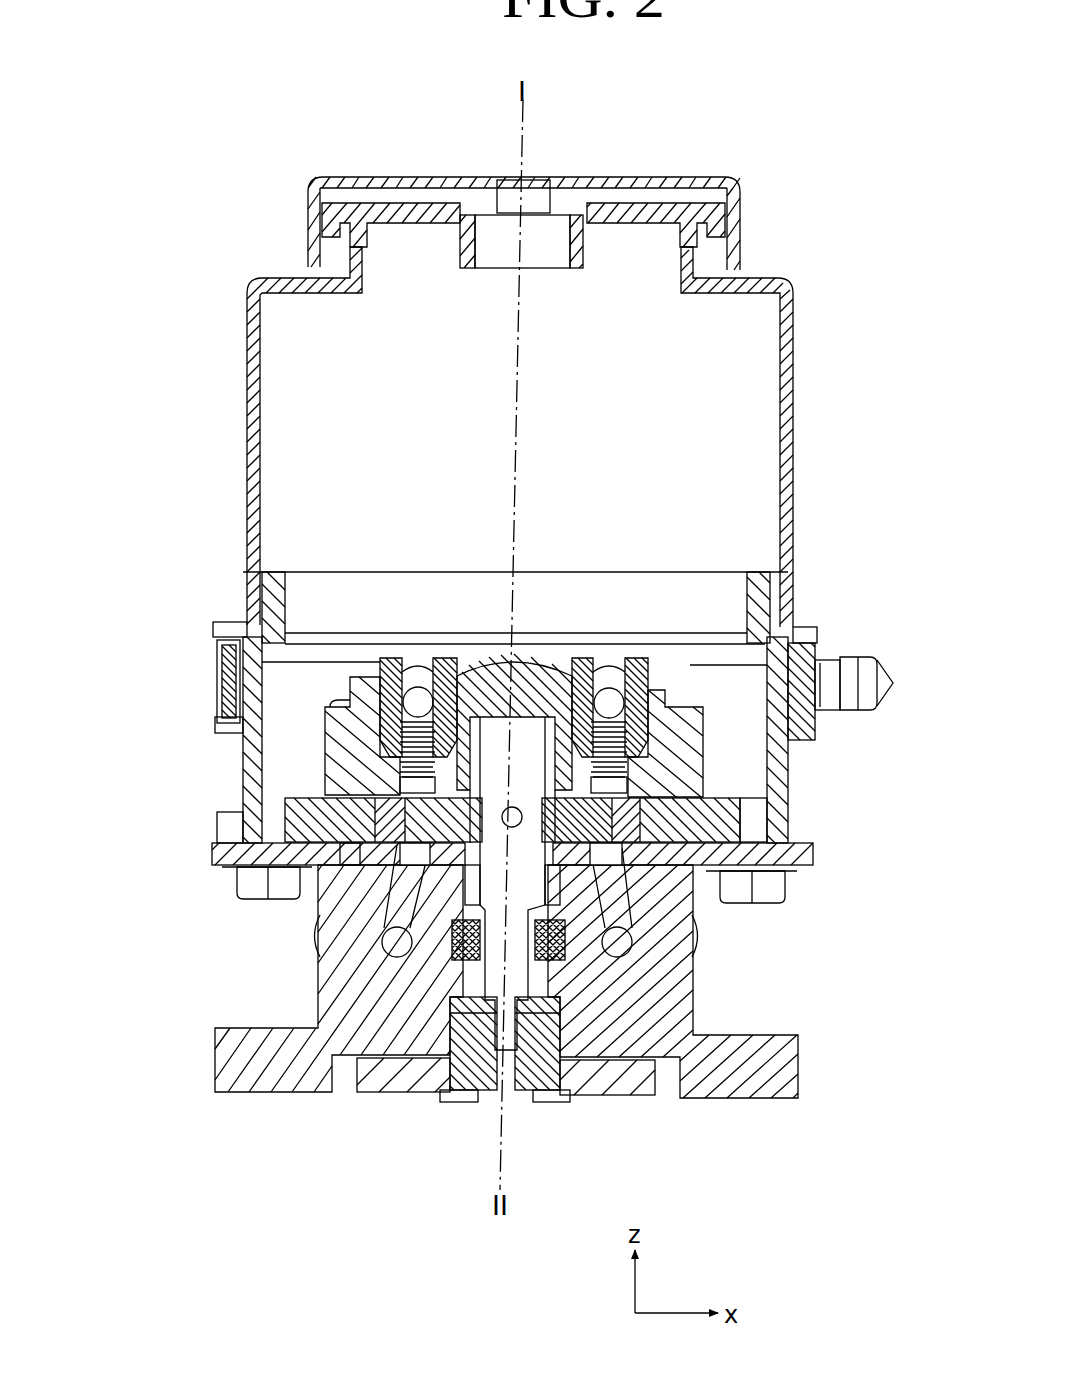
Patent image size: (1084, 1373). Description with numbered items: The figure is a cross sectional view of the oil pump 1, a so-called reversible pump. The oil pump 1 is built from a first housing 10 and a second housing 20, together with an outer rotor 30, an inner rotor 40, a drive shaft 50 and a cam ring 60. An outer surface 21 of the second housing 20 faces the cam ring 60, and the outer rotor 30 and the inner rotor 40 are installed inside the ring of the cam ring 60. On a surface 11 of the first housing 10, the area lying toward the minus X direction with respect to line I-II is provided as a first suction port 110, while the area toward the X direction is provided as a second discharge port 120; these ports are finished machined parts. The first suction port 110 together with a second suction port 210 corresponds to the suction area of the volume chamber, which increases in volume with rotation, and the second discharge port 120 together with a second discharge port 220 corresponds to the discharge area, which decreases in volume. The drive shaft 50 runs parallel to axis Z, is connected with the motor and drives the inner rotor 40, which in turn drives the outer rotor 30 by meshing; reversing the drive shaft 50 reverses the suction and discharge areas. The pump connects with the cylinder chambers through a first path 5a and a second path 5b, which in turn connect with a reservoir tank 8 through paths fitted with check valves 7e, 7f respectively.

The oil pump 1 is at (285, 683).
The reservoir tank 8 is at (710, 460).
The check valve 7e is at (418, 702).
The check valve 7f is at (609, 703).
The second suction port 210 is at (238, 700).
The second housing 20 is at (325, 747).
The second discharge port 220 is at (640, 780).
The outer surface 21 is at (322, 778).
The cam ring 60 is at (733, 793).
The surface 11 is at (222, 823).
The inner rotor 40 is at (345, 856).
The first housing 10 is at (320, 982).
The first suction port 110 is at (387, 857).
The outer rotor 30 is at (695, 915).
The second discharge port 120 is at (695, 957).
The first path 5a is at (395, 945).
The second path 5b is at (616, 945).
The drive shaft 50 is at (496, 987).